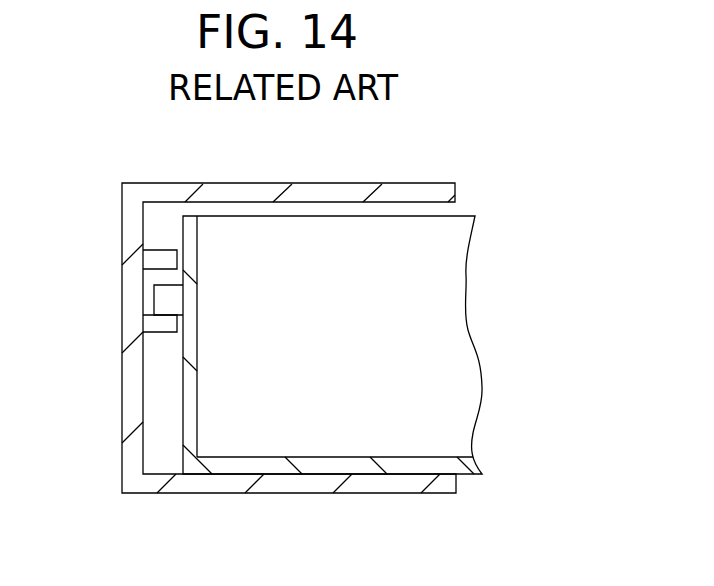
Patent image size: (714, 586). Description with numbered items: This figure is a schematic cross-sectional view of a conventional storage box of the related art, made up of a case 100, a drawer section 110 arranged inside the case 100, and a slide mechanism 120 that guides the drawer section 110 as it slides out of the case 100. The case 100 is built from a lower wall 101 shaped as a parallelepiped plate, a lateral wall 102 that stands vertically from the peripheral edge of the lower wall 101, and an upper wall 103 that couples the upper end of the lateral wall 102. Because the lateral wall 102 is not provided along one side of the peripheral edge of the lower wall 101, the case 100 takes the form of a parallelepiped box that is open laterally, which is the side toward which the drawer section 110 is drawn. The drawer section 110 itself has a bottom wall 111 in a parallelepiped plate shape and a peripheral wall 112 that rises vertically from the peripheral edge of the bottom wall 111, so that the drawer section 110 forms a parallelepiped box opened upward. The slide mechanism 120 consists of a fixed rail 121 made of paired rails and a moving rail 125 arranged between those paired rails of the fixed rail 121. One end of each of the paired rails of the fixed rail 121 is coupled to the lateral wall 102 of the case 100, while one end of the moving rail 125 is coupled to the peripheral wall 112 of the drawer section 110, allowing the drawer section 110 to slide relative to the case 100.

The case 100 is at (253, 340).
The lower wall 101 is at (277, 495).
The lateral wall 102 is at (122, 452).
The upper wall 103 is at (248, 184).
The drawer section 110 is at (384, 345).
The bottom wall 111 is at (332, 457).
The peripheral wall 112 is at (197, 395).
The slide mechanism 120 is at (152, 319).
The fixed rail 121 is at (157, 263).
The moving rail 125 is at (163, 286).